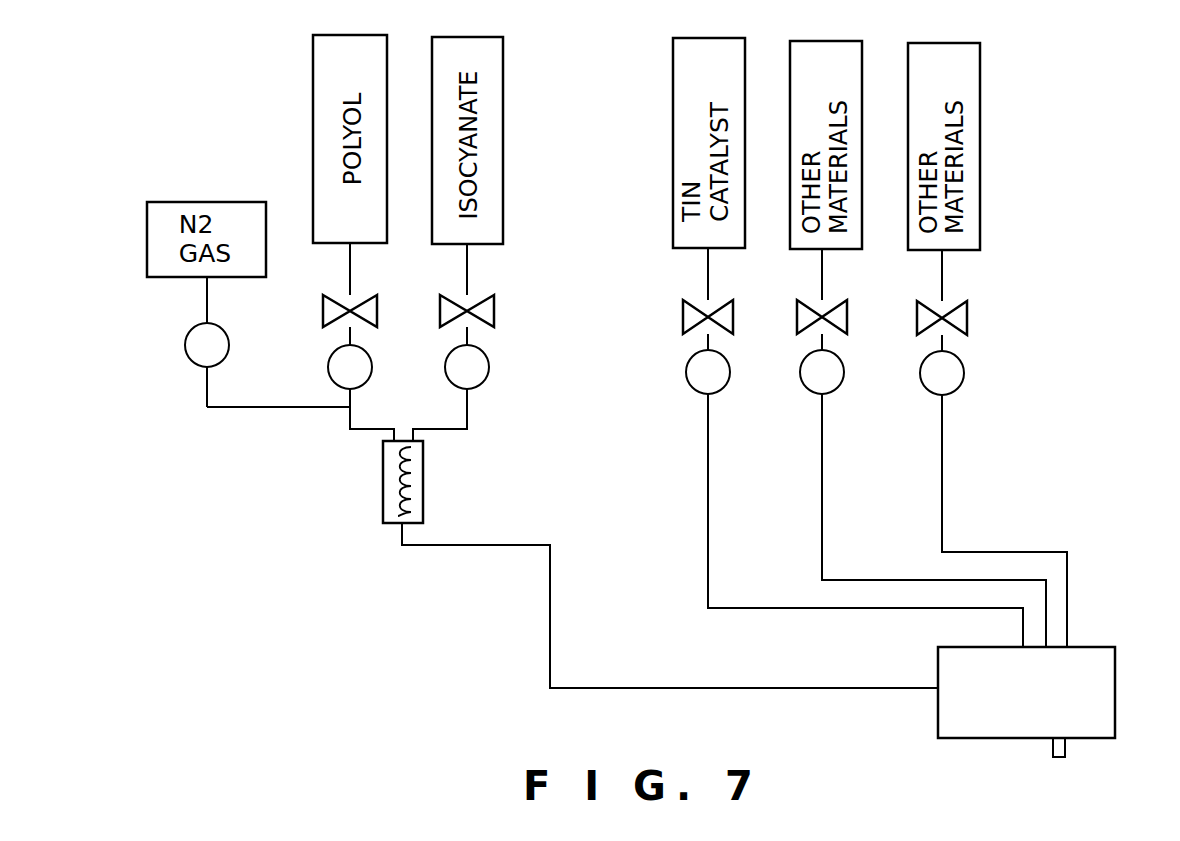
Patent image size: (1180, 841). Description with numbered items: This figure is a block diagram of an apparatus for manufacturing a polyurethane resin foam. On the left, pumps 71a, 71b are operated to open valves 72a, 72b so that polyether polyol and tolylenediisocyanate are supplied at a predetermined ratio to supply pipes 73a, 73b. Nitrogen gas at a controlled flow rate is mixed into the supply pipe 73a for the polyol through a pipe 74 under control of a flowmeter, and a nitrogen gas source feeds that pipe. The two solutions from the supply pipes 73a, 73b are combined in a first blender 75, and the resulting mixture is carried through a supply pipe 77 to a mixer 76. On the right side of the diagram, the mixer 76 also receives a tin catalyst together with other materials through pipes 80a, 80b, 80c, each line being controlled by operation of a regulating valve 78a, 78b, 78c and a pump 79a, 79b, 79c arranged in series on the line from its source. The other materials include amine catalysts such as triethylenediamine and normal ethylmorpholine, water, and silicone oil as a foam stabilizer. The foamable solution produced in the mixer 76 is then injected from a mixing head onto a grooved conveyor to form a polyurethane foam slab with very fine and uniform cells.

The pump 71a is at (323, 312).
The pump 71b is at (494, 312).
The valve 72a is at (328, 368).
The valve 72b is at (489, 370).
The supply pipe 73a is at (358, 432).
The supply pipe 73b is at (453, 431).
The pipe 74 is at (206, 388).
The first blender 75 is at (423, 508).
The mixer 76 is at (1118, 665).
The supply pipe 77 is at (618, 686).
The regulating valve 78a is at (684, 312).
The regulating valve 78b is at (848, 313).
The regulating valve 78c is at (969, 320).
The pump 79a is at (690, 382).
The pump 79b is at (838, 391).
The pump 79c is at (965, 375).
The pipe 80a is at (706, 515).
The pipe 80b is at (823, 512).
The pipe 80c is at (943, 488).